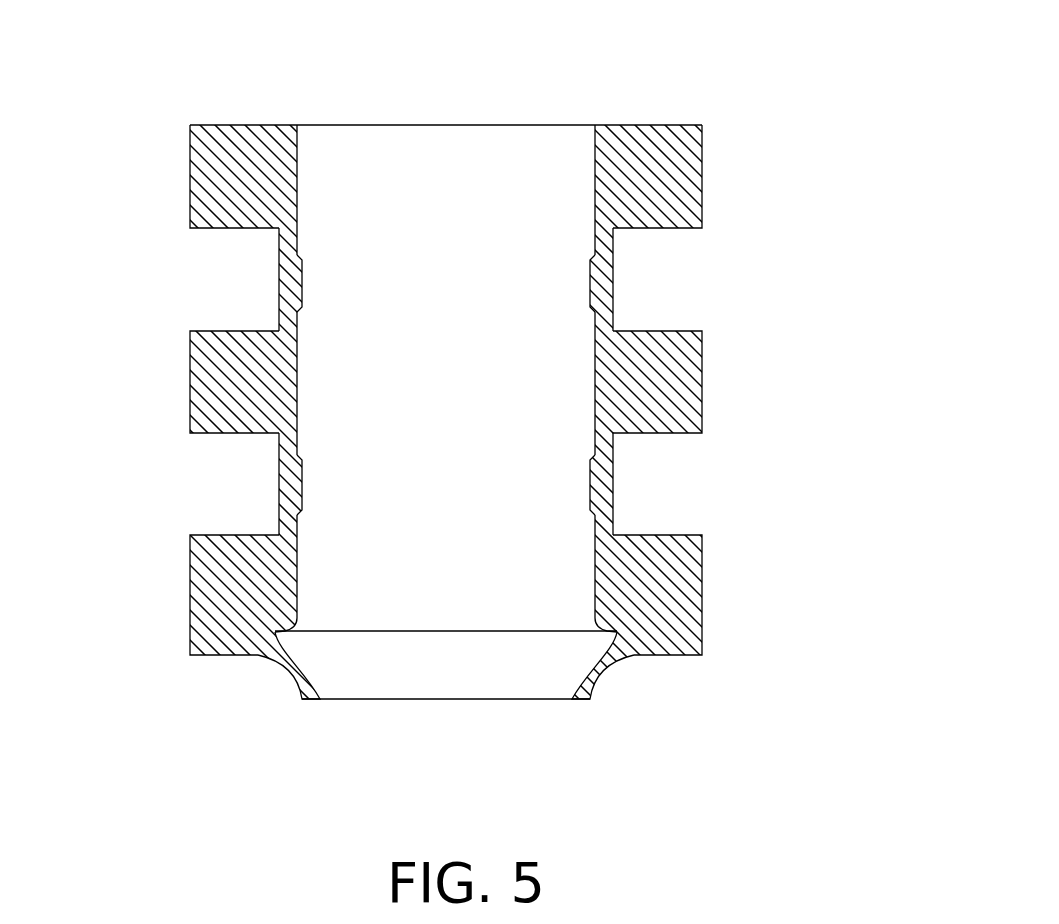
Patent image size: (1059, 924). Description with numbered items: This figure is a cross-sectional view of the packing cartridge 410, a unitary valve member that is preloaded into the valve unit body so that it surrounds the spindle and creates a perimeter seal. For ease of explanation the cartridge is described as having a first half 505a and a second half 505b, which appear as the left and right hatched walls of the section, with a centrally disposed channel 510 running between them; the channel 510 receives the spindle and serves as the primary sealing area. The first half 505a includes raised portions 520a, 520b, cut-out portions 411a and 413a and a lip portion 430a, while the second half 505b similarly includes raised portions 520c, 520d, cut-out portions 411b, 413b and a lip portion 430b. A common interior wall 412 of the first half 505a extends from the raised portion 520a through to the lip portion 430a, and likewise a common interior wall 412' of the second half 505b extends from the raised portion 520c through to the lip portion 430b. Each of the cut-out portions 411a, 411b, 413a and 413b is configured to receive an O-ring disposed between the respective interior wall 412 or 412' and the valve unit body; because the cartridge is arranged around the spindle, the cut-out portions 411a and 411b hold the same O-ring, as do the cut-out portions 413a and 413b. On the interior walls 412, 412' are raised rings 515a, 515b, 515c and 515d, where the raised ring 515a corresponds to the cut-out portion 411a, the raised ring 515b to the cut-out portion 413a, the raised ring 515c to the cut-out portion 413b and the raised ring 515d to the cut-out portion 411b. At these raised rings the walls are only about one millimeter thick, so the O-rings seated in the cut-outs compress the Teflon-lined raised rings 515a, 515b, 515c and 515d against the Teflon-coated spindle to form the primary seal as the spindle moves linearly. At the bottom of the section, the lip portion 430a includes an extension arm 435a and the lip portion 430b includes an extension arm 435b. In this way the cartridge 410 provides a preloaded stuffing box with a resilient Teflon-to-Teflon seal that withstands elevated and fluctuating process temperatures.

The packing cartridge 410 is at (528, 97).
The first half 505a is at (221, 112).
The second half 505b is at (653, 120).
The channel 510 is at (438, 163).
The interior wall 412 is at (315, 355).
The interior wall 412' is at (612, 351).
The raised ring 515a is at (303, 278).
The raised ring 515b is at (300, 497).
The raised ring 515c is at (590, 445).
The raised ring 515d is at (592, 310).
The raised portion 520a is at (188, 173).
The raised portion 520b is at (188, 381).
The raised portion 520c is at (703, 174).
The raised portion 520d is at (703, 431).
The cut-out portion 411a is at (228, 279).
The cut-out portion 411b is at (685, 268).
The cut-out portion 413a is at (234, 481).
The cut-out portion 413b is at (688, 490).
The lip portion 430a is at (190, 628).
The lip portion 430b is at (703, 610).
The extension arm 435a is at (287, 675).
The extension arm 435b is at (595, 686).